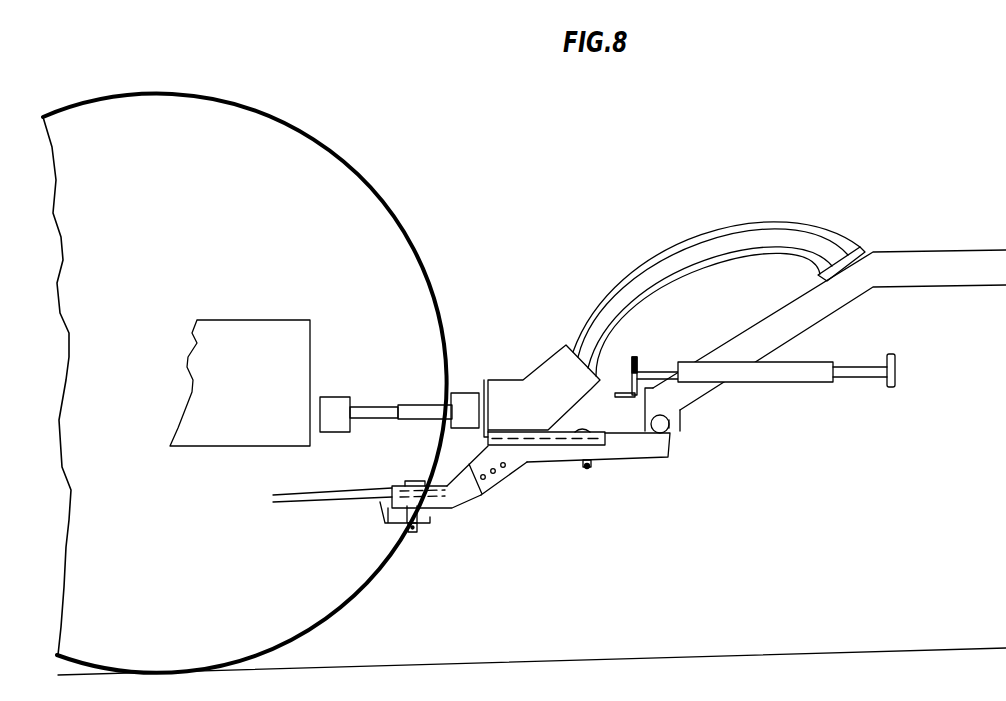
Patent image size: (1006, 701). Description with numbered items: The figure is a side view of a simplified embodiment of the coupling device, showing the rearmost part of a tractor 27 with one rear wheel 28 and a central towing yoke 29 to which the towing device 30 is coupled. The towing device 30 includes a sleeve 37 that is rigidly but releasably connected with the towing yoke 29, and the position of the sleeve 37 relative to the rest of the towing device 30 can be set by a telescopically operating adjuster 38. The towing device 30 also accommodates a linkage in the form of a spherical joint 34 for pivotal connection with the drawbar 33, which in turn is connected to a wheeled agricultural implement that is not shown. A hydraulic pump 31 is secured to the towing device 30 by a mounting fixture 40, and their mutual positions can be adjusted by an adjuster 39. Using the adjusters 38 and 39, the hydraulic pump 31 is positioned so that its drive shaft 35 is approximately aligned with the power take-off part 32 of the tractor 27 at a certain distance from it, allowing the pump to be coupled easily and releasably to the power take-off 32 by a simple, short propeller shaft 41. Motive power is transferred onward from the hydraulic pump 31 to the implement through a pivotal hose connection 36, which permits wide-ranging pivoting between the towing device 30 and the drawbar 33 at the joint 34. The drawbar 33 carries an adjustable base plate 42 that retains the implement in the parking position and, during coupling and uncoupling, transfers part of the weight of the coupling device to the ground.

The tractor 27 is at (126, 449).
The rear wheel 28 is at (337, 181).
The central towing yoke 29 is at (428, 524).
The towing device 30 is at (655, 455).
The hydraulic pump 31 is at (507, 392).
The power take-off part 32 is at (319, 414).
The drawbar 33 is at (941, 258).
The spherical joint 34 is at (669, 424).
The drive shaft 35 is at (461, 398).
The pivotal hose connection 36 is at (636, 268).
The sleeve 37 is at (455, 497).
The telescopically operating adjuster 38 is at (498, 472).
The adjuster 39 is at (591, 468).
The mounting fixture 40 is at (548, 446).
The propeller shaft 41 is at (387, 405).
The adjustable base plate 42 is at (790, 375).